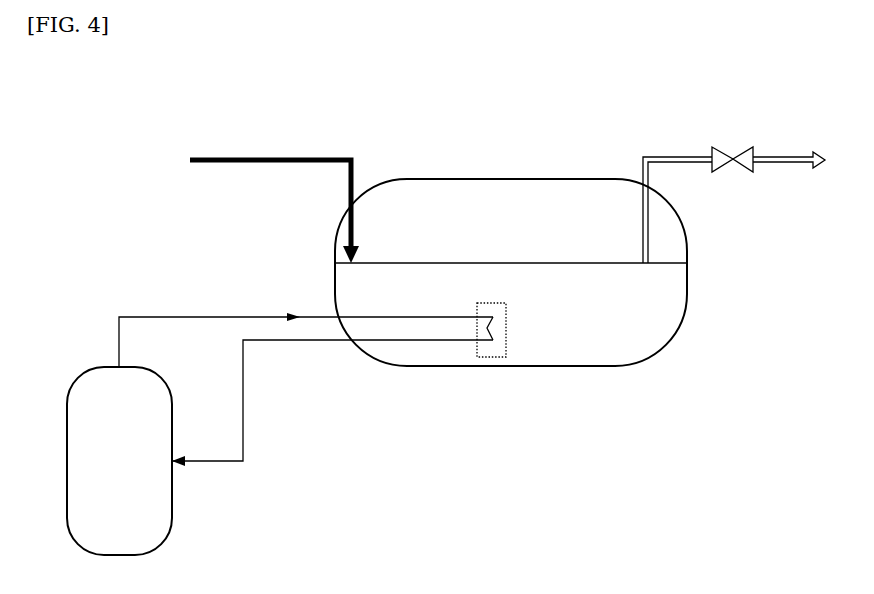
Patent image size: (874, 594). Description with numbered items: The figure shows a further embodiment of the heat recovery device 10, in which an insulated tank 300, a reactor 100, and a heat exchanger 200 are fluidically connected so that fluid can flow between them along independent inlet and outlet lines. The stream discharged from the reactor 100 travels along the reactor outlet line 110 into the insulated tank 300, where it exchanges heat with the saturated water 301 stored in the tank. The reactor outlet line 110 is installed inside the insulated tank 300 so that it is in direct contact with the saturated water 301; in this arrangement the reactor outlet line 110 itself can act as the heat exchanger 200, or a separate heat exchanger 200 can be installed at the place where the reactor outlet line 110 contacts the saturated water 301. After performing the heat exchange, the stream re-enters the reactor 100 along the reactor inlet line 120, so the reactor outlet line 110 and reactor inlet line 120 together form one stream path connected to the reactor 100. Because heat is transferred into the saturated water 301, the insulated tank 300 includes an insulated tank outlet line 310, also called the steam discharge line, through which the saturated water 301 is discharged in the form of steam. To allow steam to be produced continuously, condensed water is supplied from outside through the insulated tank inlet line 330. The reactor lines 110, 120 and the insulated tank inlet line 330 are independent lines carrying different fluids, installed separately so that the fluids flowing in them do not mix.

The heat recovery device 10 is at (110, 137).
The reactor 100 is at (172, 500).
The reactor outlet line 110 is at (147, 316).
The reactor inlet line 120 is at (286, 344).
The heat exchanger 200 is at (492, 358).
The insulated tank 300 is at (497, 179).
The saturated water 301 is at (652, 337).
The insulated tank outlet line 310 is at (656, 157).
The insulated tank inlet line 330 is at (262, 158).